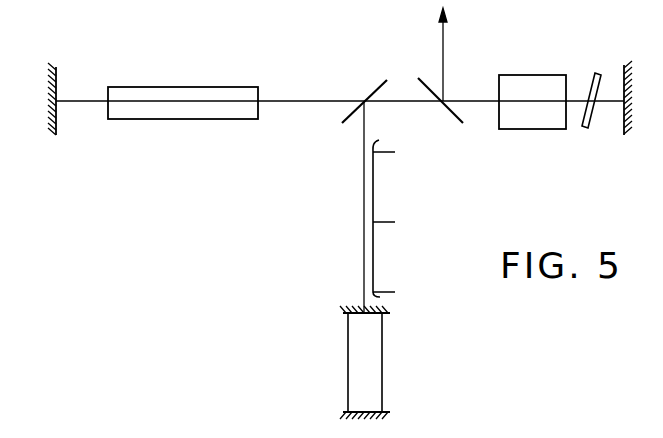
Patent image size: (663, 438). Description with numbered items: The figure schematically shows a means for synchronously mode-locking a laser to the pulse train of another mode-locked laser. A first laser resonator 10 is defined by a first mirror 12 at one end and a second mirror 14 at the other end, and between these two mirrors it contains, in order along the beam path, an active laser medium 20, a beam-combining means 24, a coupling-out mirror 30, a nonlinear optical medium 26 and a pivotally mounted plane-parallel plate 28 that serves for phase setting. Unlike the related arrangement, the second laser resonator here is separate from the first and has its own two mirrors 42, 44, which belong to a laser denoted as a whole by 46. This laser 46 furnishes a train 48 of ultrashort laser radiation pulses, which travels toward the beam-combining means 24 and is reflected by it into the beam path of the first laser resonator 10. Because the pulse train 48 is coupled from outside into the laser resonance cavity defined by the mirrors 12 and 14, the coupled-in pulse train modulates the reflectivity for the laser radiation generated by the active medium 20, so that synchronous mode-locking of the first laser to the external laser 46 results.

The first laser resonator 10 is at (275, 65).
The first mirror 12 is at (57, 131).
The second mirror 14 is at (624, 70).
The active laser medium 20 is at (196, 119).
The beam-combining means 24 is at (340, 123).
The nonlinear optical medium 26 is at (522, 129).
The pivotally mounted plane-parallel plate 28 is at (583, 128).
The coupling-out mirror 30 is at (465, 124).
The mirror of second laser resonator 42 is at (385, 313).
The mirror of second laser resonator 44 is at (385, 411).
The laser 46 is at (427, 368).
The train of ultrashort laser radiation pulses 48 is at (374, 257).